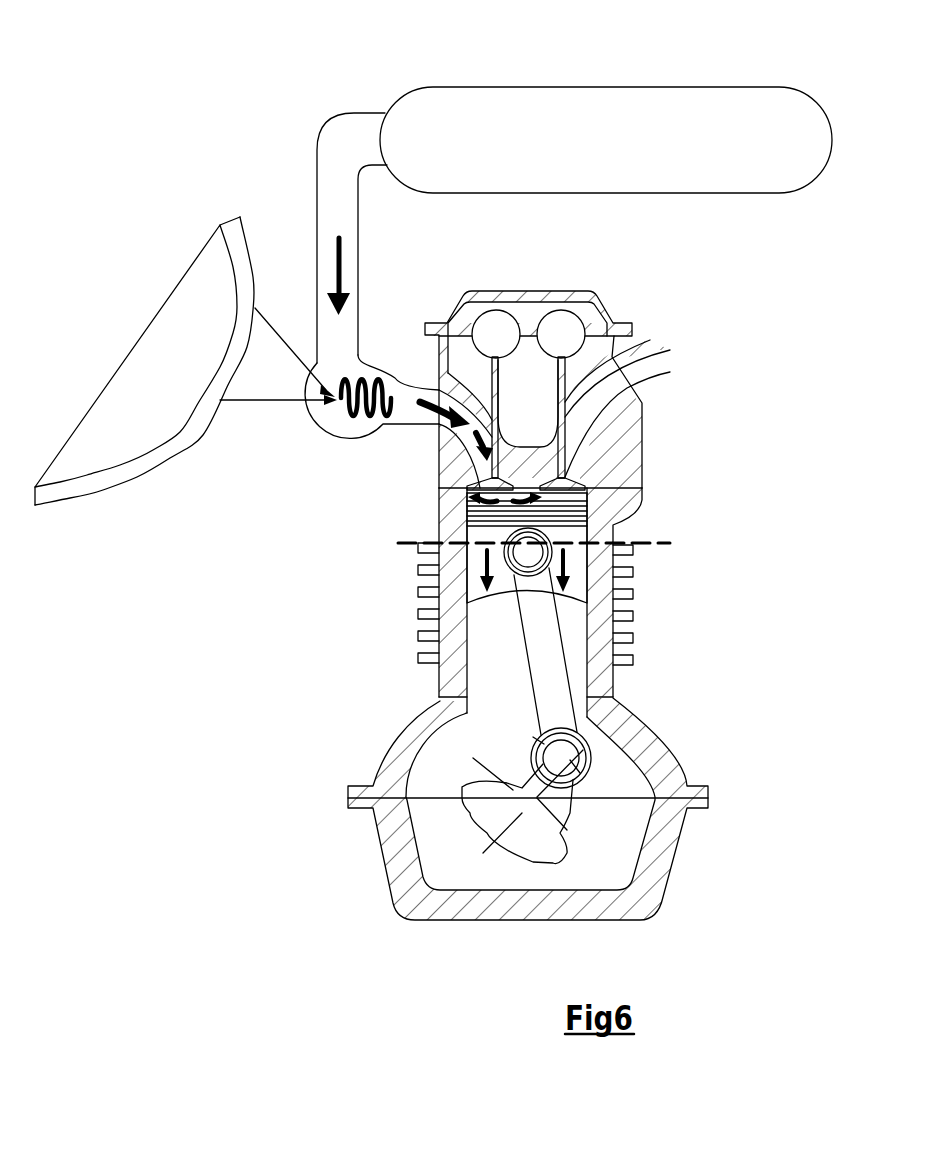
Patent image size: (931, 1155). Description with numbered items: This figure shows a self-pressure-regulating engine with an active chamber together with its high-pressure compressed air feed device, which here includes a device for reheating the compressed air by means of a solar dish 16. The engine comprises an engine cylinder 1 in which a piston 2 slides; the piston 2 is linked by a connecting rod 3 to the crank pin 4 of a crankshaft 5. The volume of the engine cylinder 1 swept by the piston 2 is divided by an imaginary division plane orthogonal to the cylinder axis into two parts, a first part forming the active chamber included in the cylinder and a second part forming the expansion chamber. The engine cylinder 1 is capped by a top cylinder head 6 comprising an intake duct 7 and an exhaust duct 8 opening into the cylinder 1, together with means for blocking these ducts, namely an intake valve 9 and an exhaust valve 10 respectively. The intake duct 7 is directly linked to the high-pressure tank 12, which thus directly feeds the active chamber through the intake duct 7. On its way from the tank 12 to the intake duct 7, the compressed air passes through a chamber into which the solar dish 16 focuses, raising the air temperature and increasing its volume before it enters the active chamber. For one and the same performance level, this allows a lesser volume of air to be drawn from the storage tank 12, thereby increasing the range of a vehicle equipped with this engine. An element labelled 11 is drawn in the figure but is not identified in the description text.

The engine cylinder 1 is at (590, 555).
The piston 2 is at (590, 605).
The connecting rod 3 is at (547, 668).
The crank pin 4 is at (580, 770).
The crankshaft 5 is at (482, 813).
The top cylinder head 6 is at (612, 452).
The intake duct 7 is at (345, 208).
The exhaust duct 8 is at (617, 387).
The intake valve 9 is at (489, 422).
The exhaust valve 10 is at (607, 325).
The heating element 11 is at (350, 440).
The high-pressure tank 12 is at (500, 103).
The solar dish 16 is at (143, 402).